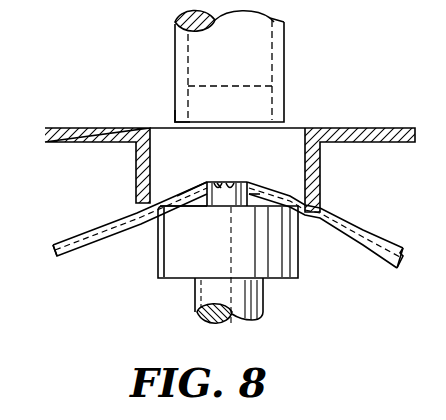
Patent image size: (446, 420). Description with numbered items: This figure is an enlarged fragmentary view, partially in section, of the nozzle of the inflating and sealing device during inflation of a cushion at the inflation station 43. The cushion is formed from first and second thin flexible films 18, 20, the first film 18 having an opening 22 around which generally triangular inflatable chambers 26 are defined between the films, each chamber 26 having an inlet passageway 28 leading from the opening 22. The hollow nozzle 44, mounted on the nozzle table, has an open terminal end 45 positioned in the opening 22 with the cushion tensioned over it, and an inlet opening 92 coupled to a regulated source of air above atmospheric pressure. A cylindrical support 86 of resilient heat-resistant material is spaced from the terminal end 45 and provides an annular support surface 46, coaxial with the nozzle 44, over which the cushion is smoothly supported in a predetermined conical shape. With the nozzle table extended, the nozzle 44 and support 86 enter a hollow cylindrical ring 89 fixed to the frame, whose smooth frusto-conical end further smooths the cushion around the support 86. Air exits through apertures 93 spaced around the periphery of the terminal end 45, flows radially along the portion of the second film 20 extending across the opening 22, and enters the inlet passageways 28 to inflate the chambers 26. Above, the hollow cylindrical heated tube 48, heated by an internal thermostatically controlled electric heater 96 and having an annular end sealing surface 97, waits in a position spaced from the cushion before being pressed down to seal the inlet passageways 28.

The first flexible film 18 is at (80, 252).
The second flexible film 20 is at (82, 237).
The opening 22 is at (179, 196).
The inflatable chamber 26 is at (57, 257).
The inlet passageway 28 is at (178, 203).
The inflation station 43 is at (350, 189).
The nozzle 44 is at (228, 199).
The terminal end 45 is at (233, 183).
The support surface 46 is at (253, 206).
The heated tube 48 is at (286, 52).
The cylindrical support 86 is at (174, 264).
The hollow cylindrical ring 89 is at (137, 160).
The inlet opening 92 is at (217, 318).
The apertures 93 is at (217, 183).
The electric heater 96 is at (276, 18).
The end sealing surface 97 is at (176, 122).